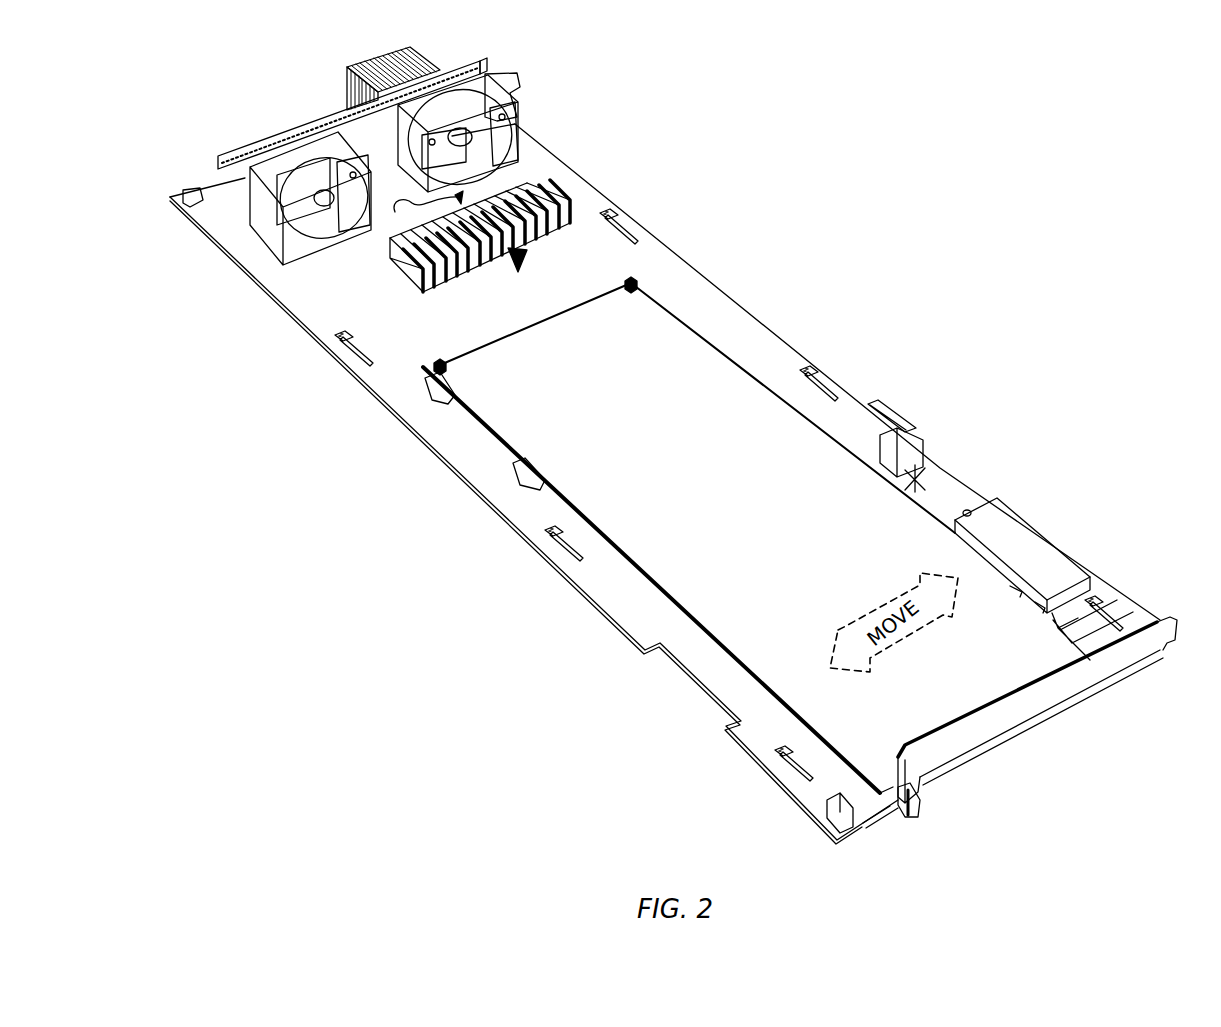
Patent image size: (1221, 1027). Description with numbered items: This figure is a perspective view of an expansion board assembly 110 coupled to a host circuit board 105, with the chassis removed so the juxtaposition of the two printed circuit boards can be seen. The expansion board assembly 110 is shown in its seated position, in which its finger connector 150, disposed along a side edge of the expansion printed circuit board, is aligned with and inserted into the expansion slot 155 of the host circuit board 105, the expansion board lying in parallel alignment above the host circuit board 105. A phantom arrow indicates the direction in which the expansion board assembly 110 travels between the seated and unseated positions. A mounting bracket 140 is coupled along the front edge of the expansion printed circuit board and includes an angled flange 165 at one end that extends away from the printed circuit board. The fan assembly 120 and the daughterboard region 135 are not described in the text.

The host circuit board 105 is at (583, 178).
The expansion board assembly 110 is at (725, 662).
The fan assembly 120 is at (370, 156).
The daughterboard 135 is at (722, 513).
The mounting bracket 140 is at (1077, 680).
The finger connector 150 is at (975, 548).
The expansion slot 155 is at (1033, 550).
The angled flange 165 is at (920, 807).